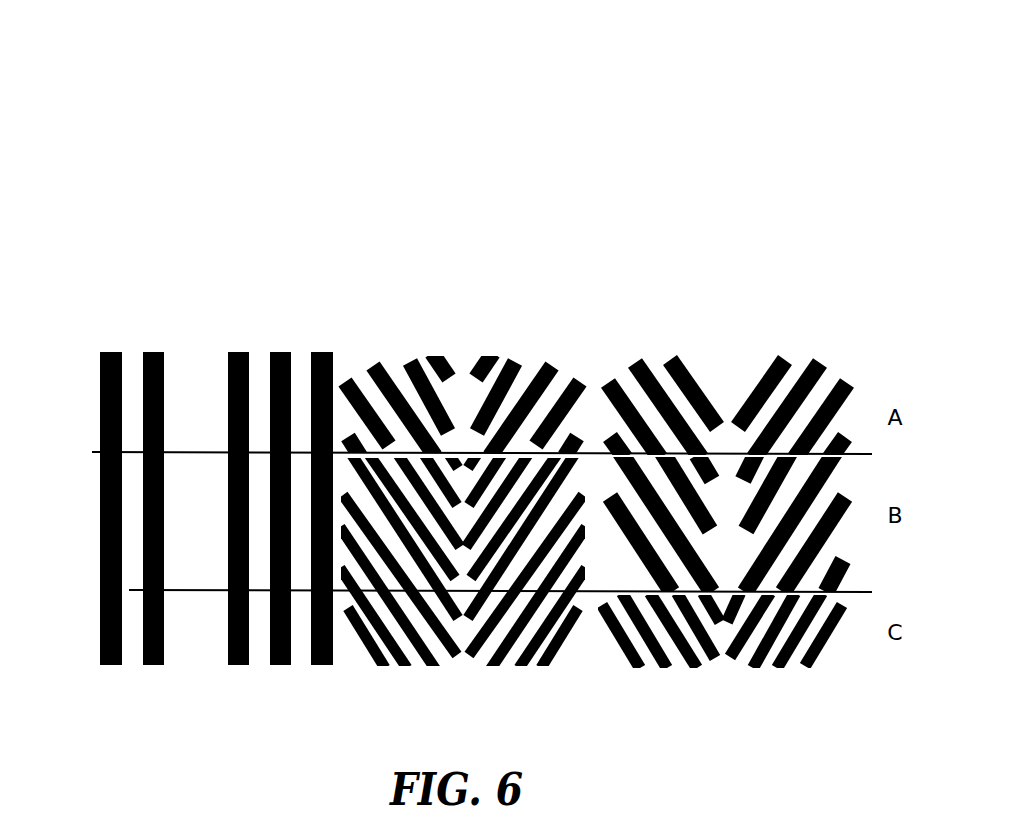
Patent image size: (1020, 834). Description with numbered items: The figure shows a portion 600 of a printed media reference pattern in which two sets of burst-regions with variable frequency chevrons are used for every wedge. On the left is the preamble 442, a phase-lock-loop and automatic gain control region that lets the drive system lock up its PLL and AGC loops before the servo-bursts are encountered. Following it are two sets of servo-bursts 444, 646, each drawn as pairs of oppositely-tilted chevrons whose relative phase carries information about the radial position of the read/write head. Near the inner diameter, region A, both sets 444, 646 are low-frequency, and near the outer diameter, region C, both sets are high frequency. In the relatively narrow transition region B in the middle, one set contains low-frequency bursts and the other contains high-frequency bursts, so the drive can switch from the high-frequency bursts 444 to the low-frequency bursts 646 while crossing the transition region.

The portion of reference pattern 600 is at (505, 158).
The preamble 442 is at (101, 325).
The servo-bursts 444 is at (342, 325).
The second set of bursts 646 is at (850, 325).